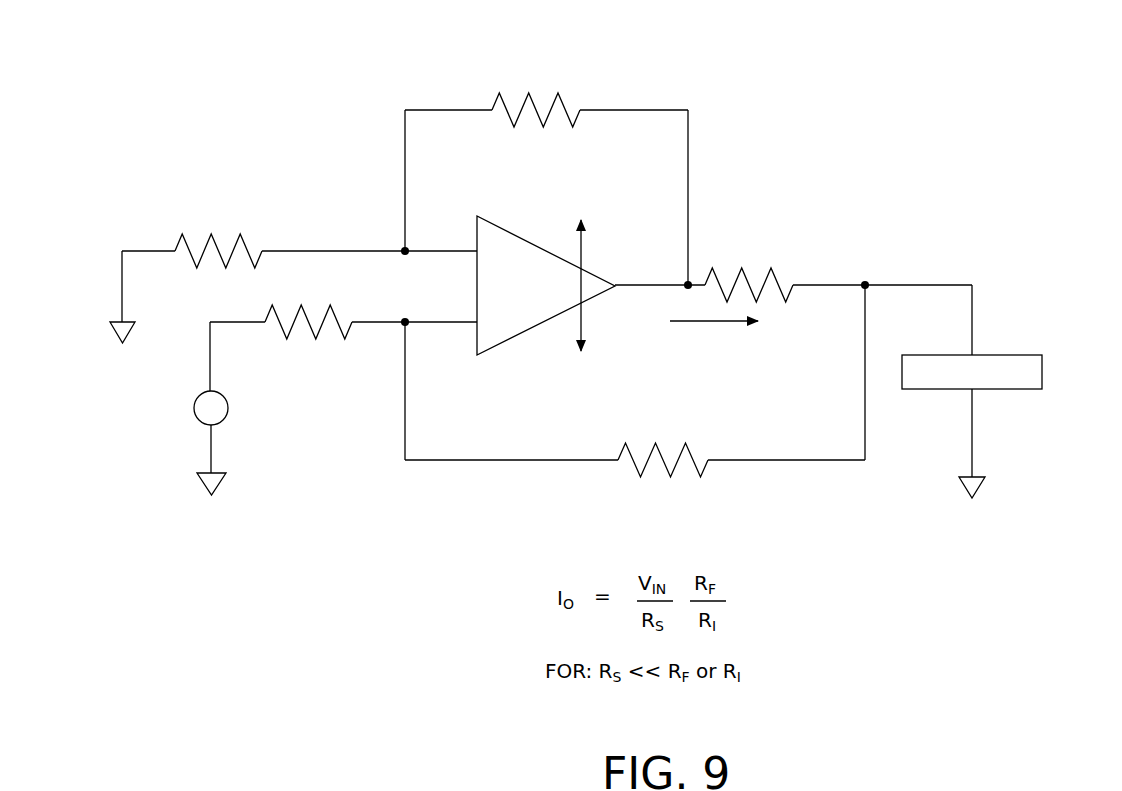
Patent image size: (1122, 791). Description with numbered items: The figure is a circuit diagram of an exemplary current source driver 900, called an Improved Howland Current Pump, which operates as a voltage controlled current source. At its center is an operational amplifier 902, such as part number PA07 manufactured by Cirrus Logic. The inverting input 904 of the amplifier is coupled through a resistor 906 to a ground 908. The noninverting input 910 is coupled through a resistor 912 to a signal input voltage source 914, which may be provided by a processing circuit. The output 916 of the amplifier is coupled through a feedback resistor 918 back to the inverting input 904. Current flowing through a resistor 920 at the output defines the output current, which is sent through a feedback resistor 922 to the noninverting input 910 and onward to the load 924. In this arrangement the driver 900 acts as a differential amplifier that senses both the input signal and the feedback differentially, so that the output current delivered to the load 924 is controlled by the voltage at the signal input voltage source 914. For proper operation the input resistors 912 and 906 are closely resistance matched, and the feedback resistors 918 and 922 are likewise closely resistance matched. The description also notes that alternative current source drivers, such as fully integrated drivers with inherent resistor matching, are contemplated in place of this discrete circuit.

The current source driver 900 is at (832, 145).
The operational amplifier 902 is at (515, 233).
The inverting input 904 is at (455, 251).
The resistor 906 is at (190, 260).
The ground 908 is at (115, 330).
The noninverting input 910 is at (458, 322).
The resistor 912 is at (314, 338).
The signal input voltage source 914 is at (194, 408).
The output 916 is at (643, 285).
The feedback resistor 918 is at (493, 103).
The resistor 920 is at (778, 278).
The feedback resistor 922 is at (647, 470).
The load 924 is at (1043, 372).